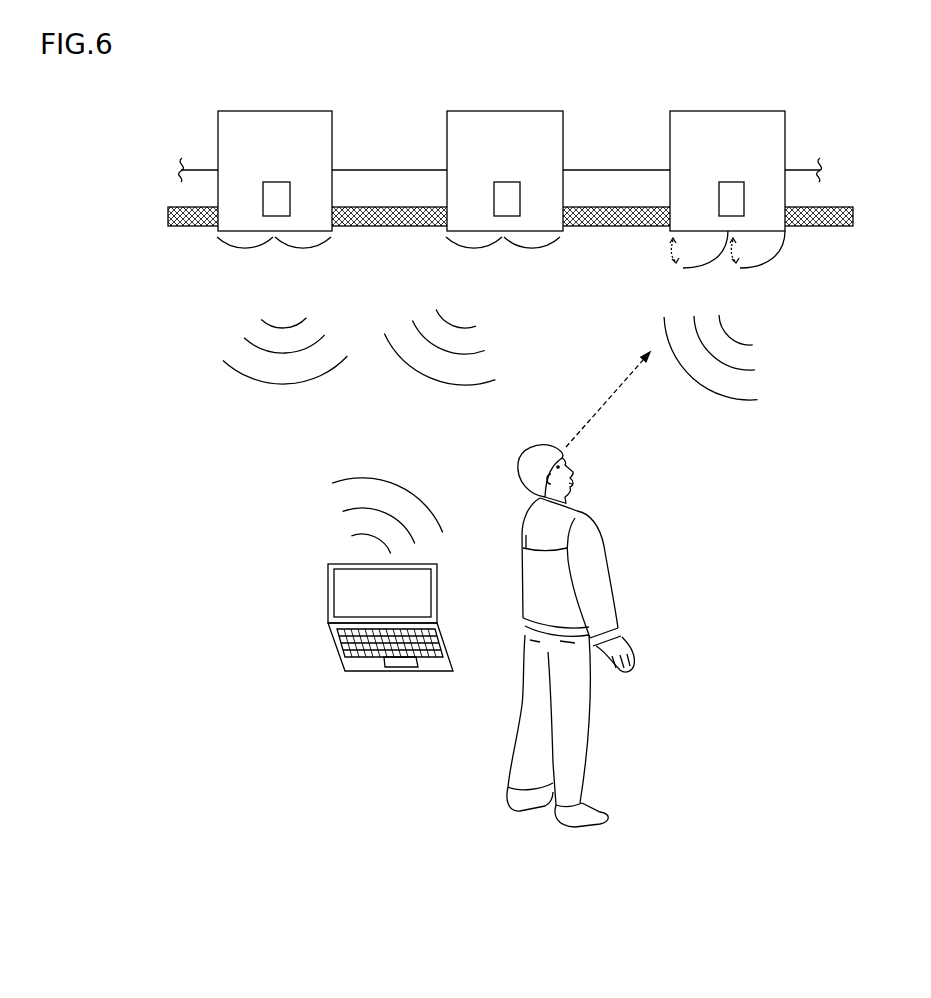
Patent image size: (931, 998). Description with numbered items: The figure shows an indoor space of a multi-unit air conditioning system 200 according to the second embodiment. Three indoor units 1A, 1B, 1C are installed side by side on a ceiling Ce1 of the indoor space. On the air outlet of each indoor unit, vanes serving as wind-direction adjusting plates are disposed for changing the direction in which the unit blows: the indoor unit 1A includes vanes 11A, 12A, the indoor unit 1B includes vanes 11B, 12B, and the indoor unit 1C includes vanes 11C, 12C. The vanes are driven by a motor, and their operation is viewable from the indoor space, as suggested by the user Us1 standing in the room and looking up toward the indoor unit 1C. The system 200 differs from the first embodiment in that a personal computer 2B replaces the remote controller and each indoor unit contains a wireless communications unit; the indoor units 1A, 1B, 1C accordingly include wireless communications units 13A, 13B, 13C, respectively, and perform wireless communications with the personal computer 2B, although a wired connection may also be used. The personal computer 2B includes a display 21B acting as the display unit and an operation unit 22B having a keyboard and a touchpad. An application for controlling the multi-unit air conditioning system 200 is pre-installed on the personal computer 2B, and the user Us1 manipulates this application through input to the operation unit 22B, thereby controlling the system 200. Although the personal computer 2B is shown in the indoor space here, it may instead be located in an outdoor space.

The multi-unit air conditioning system 200 is at (151, 90).
The indoor unit 1A is at (291, 110).
The indoor unit 1B is at (522, 110).
The indoor unit 1C is at (746, 110).
The vane 11A is at (247, 252).
The vane 12A is at (303, 252).
The vane 11B is at (476, 252).
The vane 12B is at (532, 252).
The vane 11C is at (706, 272).
The vane 12C is at (762, 272).
The wireless communications unit 13A is at (276, 182).
The wireless communications unit 13B is at (507, 182).
The wireless communications unit 13C is at (731, 182).
The ceiling Ce1 is at (826, 228).
The personal computer 2B is at (328, 590).
The display 21B is at (418, 590).
The operation unit 22B is at (440, 633).
The user Us1 is at (605, 548).